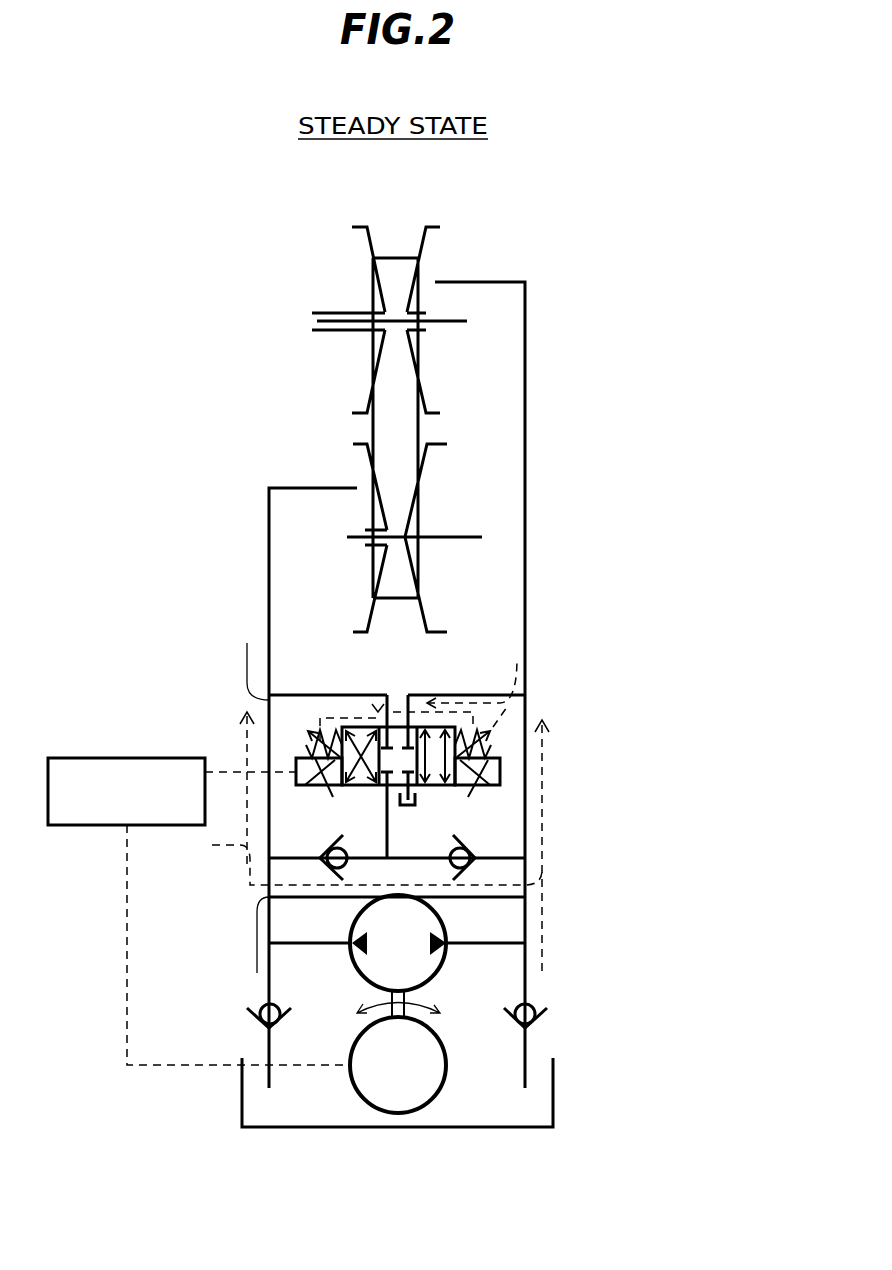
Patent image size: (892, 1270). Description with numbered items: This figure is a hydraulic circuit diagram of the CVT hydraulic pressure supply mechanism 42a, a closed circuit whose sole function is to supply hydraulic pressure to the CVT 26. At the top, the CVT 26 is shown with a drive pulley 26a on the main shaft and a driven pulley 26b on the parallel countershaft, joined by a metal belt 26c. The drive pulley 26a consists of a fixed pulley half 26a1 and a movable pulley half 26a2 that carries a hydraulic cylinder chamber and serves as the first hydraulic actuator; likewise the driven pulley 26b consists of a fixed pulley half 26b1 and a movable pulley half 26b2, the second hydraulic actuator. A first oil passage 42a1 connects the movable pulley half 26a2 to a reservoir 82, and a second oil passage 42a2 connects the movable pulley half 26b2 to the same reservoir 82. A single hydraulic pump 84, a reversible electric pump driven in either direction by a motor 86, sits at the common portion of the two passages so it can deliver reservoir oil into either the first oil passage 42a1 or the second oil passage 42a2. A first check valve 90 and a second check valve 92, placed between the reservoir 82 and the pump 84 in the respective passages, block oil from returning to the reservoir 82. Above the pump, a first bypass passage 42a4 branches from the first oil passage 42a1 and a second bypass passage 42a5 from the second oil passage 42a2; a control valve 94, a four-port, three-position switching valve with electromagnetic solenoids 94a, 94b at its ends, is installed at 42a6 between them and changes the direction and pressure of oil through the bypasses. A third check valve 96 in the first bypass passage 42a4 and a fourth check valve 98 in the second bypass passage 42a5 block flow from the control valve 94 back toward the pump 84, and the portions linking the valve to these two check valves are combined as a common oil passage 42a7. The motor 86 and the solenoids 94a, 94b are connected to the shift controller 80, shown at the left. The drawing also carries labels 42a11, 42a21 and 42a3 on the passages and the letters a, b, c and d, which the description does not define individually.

The CVT 26 is at (413, 410).
The drive pulley 26a is at (410, 301).
The fixed pulley half 26a1 is at (368, 228).
The movable pulley half 26a2 is at (424, 248).
The driven pulley 26b is at (388, 536).
The fixed pulley half 26b1 is at (440, 446).
The movable pulley half 26b2 is at (353, 441).
The metal belt 26c is at (390, 425).
The CVT hydraulic pressure supply mechanism 42a is at (409, 704).
The first oil passage 42a1 is at (526, 615).
The branch of first oil passage 42a11 is at (527, 697).
The second oil passage 42a2 is at (268, 630).
The branch of second oil passage 42a21 is at (275, 698).
The pump oil passage 42a3 is at (316, 945).
The first bypass passage 42a4 is at (480, 693).
The second bypass passage 42a5 is at (341, 693).
The connecting oil passage 42a6 is at (395, 703).
The common oil passage 42a7 is at (387, 842).
The shift controller 80 is at (172, 757).
The reservoir 82 is at (553, 1090).
The hydraulic pump 84 is at (370, 982).
The motor 86 is at (437, 1033).
The first check valve 90 is at (260, 1004).
The second check valve 92 is at (540, 1008).
The control valve 94 is at (433, 797).
The electromagnetic solenoid 94a is at (303, 787).
The electromagnetic solenoid 94b is at (488, 787).
The third check valve 96 is at (453, 866).
The fourth check valve 98 is at (347, 866).
The oil flow path a is at (548, 770).
The oil flow path b is at (291, 700).
The control signal path c is at (369, 798).
The oil flow path d is at (472, 702).